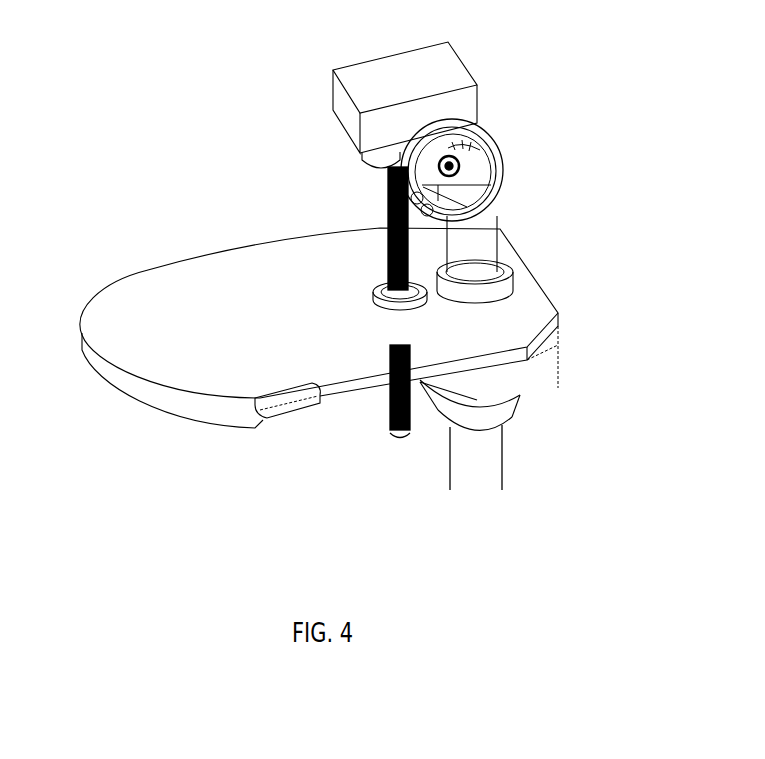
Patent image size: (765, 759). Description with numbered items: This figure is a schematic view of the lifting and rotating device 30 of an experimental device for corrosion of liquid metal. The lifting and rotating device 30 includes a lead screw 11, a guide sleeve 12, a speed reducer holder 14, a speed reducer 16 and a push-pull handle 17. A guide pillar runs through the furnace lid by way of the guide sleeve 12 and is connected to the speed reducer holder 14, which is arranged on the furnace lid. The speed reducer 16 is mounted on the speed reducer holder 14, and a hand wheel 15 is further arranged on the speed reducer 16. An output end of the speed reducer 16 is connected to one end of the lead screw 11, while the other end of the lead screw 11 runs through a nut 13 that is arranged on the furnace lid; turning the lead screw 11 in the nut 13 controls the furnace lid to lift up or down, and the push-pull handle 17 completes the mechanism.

The lifting and rotating device 30 is at (196, 143).
The lead screw 11 is at (387, 250).
The guide sleeve 12 is at (490, 412).
The nut 13 is at (385, 300).
The speed reducer holder 14 is at (455, 192).
The hand wheel 15 is at (466, 131).
The speed reducer 16 is at (413, 84).
The push-pull handle 17 is at (262, 412).